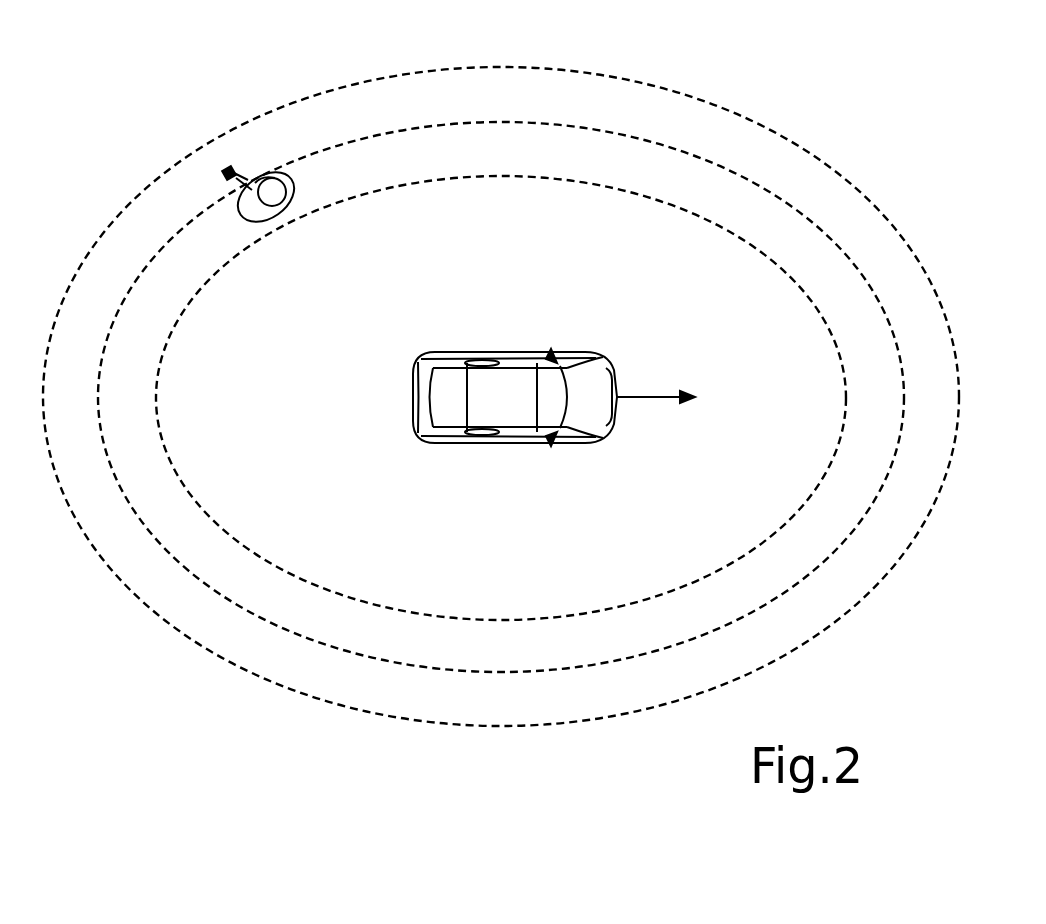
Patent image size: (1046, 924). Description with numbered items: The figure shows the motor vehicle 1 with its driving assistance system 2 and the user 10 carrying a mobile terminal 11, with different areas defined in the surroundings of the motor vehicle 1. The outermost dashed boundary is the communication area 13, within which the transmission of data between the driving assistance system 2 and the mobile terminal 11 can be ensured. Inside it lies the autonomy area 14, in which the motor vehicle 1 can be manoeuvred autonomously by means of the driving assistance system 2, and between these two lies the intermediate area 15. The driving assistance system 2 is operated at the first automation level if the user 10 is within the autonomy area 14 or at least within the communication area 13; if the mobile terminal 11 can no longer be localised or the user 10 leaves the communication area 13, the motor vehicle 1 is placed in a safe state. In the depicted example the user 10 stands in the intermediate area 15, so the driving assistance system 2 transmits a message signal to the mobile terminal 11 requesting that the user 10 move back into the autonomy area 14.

The motor vehicle 1 is at (512, 353).
The driving assistance system 2 is at (493, 408).
The user 10 is at (265, 222).
The mobile terminal 11 is at (228, 170).
The communication area 13 is at (633, 79).
The autonomy area 14 is at (671, 200).
The intermediate area 15 is at (749, 177).